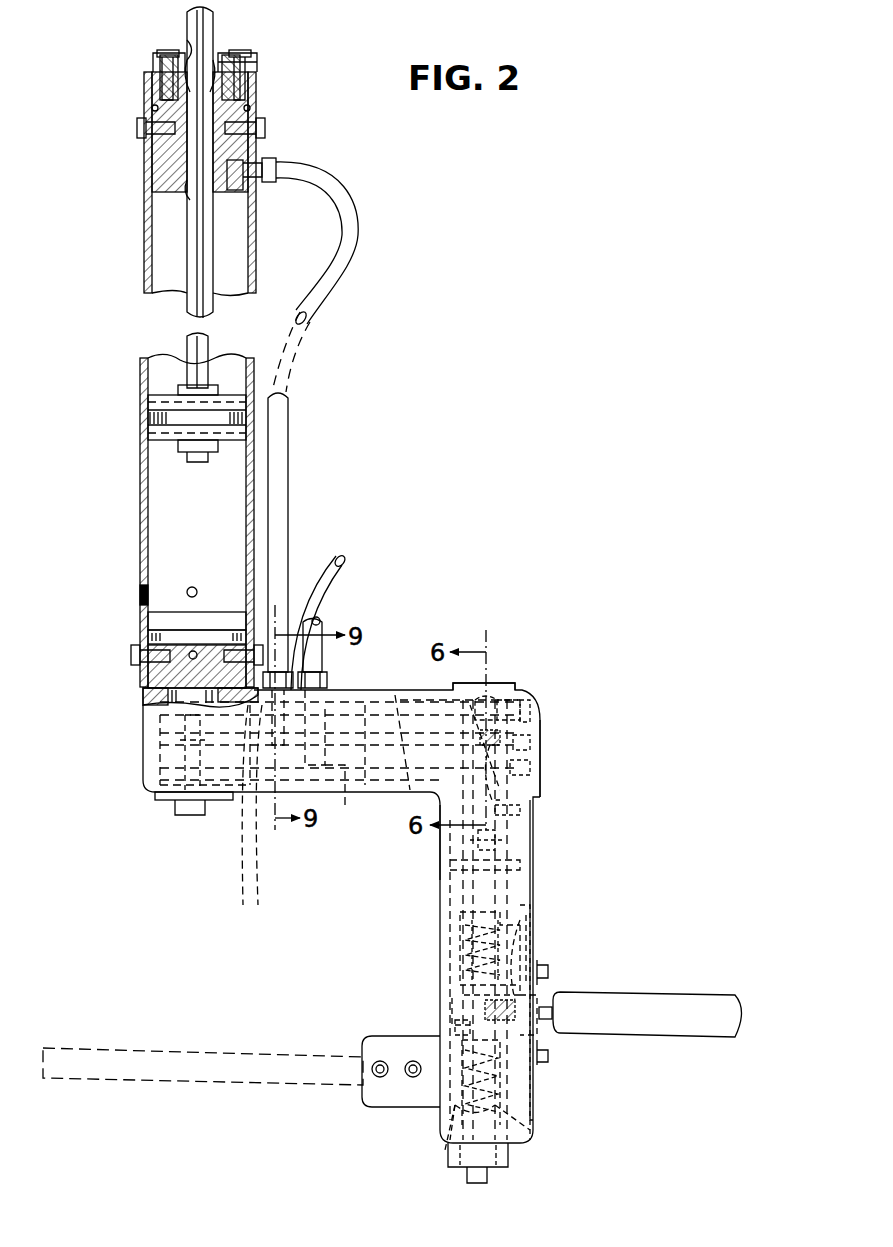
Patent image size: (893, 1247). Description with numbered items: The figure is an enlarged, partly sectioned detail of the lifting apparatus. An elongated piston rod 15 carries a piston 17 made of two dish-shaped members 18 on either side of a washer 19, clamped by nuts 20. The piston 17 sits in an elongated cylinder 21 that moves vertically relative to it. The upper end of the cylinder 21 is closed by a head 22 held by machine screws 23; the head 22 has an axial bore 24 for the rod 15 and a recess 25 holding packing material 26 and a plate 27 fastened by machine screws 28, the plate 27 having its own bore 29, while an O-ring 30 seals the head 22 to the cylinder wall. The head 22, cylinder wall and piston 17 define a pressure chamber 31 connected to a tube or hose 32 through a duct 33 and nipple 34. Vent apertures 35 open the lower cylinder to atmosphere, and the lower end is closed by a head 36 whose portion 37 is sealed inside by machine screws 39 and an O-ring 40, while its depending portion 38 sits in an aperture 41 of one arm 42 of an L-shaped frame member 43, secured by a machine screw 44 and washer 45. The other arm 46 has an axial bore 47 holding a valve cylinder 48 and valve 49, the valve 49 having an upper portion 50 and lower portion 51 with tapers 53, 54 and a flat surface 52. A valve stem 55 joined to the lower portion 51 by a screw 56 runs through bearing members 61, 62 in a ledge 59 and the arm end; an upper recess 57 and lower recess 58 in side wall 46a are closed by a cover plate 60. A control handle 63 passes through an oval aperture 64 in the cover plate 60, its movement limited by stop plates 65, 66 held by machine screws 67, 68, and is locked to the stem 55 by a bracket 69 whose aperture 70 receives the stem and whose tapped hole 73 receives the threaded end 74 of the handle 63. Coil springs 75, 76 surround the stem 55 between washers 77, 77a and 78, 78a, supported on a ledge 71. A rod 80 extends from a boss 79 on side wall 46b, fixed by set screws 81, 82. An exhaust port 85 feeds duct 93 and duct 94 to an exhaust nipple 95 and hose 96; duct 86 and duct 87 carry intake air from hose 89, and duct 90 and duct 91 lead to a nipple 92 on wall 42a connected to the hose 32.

The piston rod 15 is at (196, 247).
The piston 17 is at (228, 381).
The dish-shaped members 18 is at (150, 401).
The washer 19 is at (178, 417).
The nuts 20 is at (180, 391).
The cylinder 21 is at (140, 500).
The head 22 is at (168, 163).
The machine screws 23 is at (136, 129).
The axial bore 24 is at (186, 191).
The recess 25 is at (176, 61).
The packing material 26 is at (222, 59).
The plate 27 is at (258, 63).
The machine screws 28 is at (156, 53).
The axial bore 29 is at (190, 53).
The O-ring 30 is at (150, 108).
The pressure chamber 31 is at (236, 241).
The tube or hose 32 is at (325, 286).
The duct 33 is at (232, 191).
The nipple 34 is at (272, 159).
The vent apertures 35 is at (200, 591).
The head 36 is at (160, 620).
The portion 37 is at (180, 671).
The portion 38 is at (170, 707).
The machine screws 39 is at (160, 677).
The O-ring 40 is at (150, 631).
The aperture 41 is at (158, 749).
The arm 42 is at (235, 793).
The wall 42a is at (405, 691).
The L-shaped frame member 43 is at (390, 689).
The machine screw 44 is at (190, 813).
The washer 45 is at (155, 797).
The arm 46 is at (440, 1131).
The side wall 46a is at (541, 736).
The side wall 46b is at (440, 856).
The axial bore 47 is at (510, 691).
The valve cylinder 48 is at (532, 733).
The valve 49 is at (510, 791).
The upper portion 50 is at (492, 696).
The lower portion 51 is at (510, 801).
The flat surface 52 is at (503, 741).
The taper 53 is at (530, 699).
The taper 54 is at (532, 771).
The valve stem 55 is at (480, 1179).
The screw 56 is at (500, 846).
The upper recess 57 is at (520, 866).
The lower recess 58 is at (522, 936).
The ledge 59 is at (535, 906).
The cover plate 60 is at (540, 888).
The bearing member 61 is at (450, 887).
The bearing member 62 is at (450, 1163).
The control handle 63 is at (708, 994).
The aperture 64 is at (545, 991).
The stop plate 65 is at (540, 976).
The stop plate 66 is at (537, 1076).
The machine screw 67 is at (549, 971).
The machine screw 68 is at (549, 1061).
The bracket 69 is at (450, 1001).
The aperture 70 is at (480, 1013).
The ledge 71 is at (527, 961).
The tapped hole 73 is at (495, 1082).
The threaded end 74 is at (545, 1021).
The coil spring 75 is at (470, 951).
The coil spring 76 is at (445, 1136).
The washer 77 is at (460, 933).
The washer 77a is at (460, 979).
The washer 78 is at (535, 1136).
The washer 78a is at (455, 1028).
The boss 79 is at (362, 1101).
The rod 80 is at (100, 1081).
The set screw 81 is at (372, 1064).
The set screw 82 is at (406, 1064).
The exhaust port 85 is at (432, 783).
The duct 86 is at (366, 691).
The duct 87 is at (248, 805).
The tube or flexible hose 89 is at (344, 561).
The duct 90 is at (365, 691).
The duct 91 is at (263, 791).
The nipple 92 is at (318, 621).
The duct 93 is at (352, 811).
The duct 94 is at (330, 786).
The exhaust nipple 95 is at (312, 675).
The tube or hose 96 is at (320, 621).